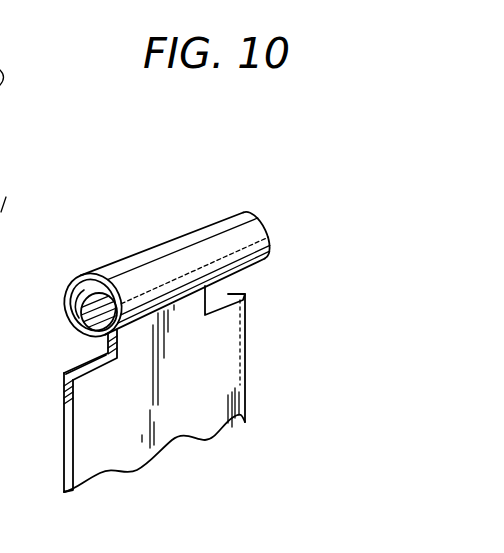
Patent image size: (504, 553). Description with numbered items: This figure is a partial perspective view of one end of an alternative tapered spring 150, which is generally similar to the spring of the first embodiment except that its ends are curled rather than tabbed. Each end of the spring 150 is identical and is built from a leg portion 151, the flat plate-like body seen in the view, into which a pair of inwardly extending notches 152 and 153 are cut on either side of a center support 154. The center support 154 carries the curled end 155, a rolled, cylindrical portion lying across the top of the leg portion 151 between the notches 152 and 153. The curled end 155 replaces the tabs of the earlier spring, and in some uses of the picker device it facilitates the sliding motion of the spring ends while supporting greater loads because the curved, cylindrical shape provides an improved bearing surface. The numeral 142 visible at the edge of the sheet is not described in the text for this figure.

The adjacent figure reference 142 is at (0, 145).
The spring 150 is at (250, 325).
The leg portion 151 is at (243, 398).
The inwardly extending notch 152 is at (231, 297).
The inwardly extending notch 153 is at (83, 366).
The center support 154 is at (166, 316).
The curled end 155 is at (142, 268).